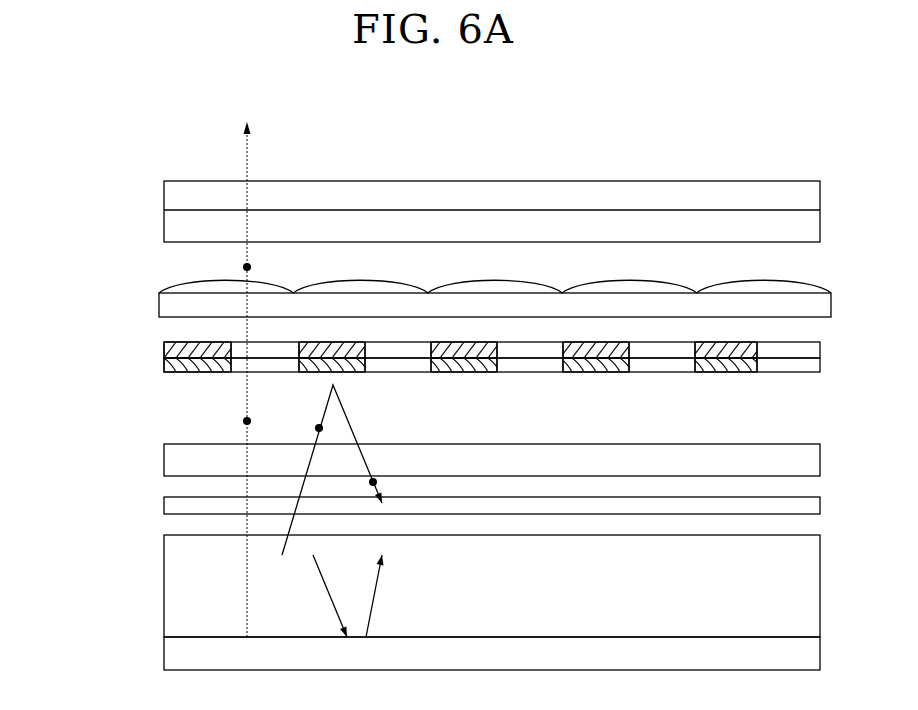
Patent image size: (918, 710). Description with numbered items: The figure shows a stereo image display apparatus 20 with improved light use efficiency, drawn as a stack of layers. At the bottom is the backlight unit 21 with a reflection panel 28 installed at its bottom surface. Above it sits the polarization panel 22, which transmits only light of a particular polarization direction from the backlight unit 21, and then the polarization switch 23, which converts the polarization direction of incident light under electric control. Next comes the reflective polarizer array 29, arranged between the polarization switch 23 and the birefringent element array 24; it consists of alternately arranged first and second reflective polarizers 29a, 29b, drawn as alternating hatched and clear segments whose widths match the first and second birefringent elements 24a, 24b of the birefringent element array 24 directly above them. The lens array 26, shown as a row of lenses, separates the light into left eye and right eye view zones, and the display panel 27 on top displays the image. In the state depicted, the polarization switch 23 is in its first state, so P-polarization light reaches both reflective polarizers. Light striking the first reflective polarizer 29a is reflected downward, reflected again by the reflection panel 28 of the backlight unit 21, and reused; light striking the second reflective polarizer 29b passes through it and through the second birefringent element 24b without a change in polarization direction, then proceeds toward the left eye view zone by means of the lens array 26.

The image display apparatus 20 is at (112, 150).
The backlight unit 21 is at (167, 584).
The polarization panel 22 is at (167, 509).
The polarization switch 23 is at (167, 460).
The birefringent element array 24 is at (91, 320).
The first birefringent element 24a is at (172, 347).
The second birefringent element 24b is at (237, 342).
The lens array 26 is at (167, 302).
The display panel 27 is at (167, 197).
The reflection panel 28 is at (167, 655).
The reflective polarizer array 29 is at (91, 375).
The first reflective polarizer 29a is at (168, 367).
The second reflective polarizer 29b is at (243, 368).